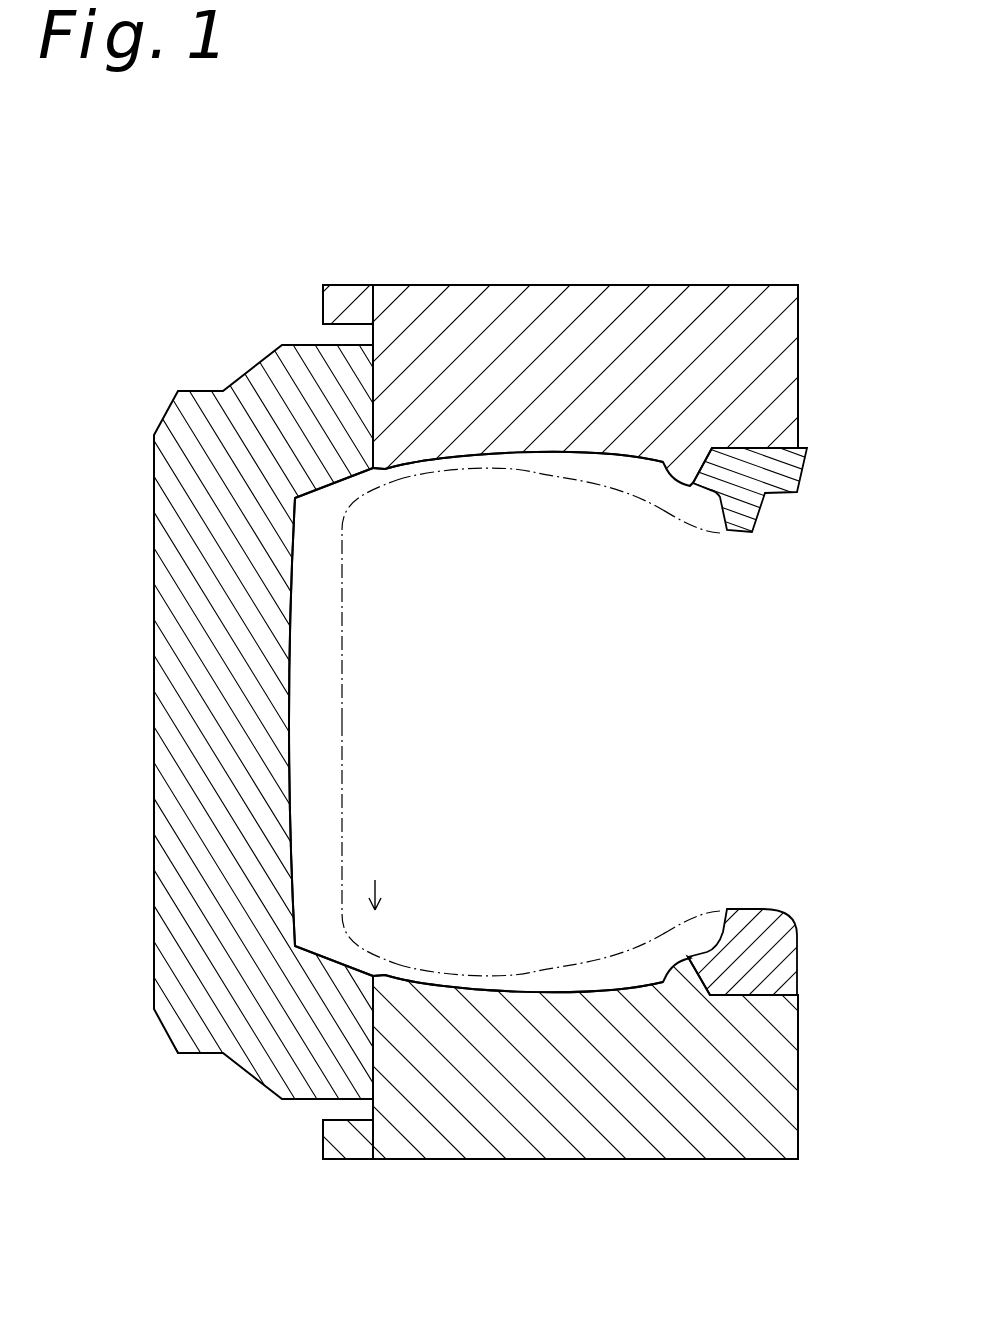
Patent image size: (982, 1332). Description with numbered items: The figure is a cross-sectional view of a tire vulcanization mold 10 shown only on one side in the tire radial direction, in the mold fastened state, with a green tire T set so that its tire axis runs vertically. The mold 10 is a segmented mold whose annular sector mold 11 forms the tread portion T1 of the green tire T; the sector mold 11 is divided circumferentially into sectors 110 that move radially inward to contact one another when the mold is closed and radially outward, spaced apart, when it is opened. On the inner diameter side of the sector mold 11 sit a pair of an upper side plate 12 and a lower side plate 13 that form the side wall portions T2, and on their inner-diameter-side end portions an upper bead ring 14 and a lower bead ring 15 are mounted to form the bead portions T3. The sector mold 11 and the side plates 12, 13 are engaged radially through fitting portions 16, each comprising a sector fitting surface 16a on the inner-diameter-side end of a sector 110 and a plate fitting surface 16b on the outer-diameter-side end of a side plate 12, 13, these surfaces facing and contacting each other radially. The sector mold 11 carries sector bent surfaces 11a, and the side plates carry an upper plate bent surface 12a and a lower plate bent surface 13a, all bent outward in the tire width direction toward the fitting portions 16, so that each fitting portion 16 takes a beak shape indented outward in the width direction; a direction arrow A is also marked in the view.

The tire vulcanization mold 10 is at (256, 347).
The sector mold 11 is at (257, 1083).
The sector 110 is at (206, 722).
The sector bent surface 11a is at (374, 478).
The upper side plate 12 is at (612, 285).
The upper plate bent surface 12a is at (377, 471).
The lower side plate 13 is at (548, 1160).
The lower plate bent surface 13a is at (378, 975).
The upper bead ring 14 is at (763, 510).
The lower bead ring 15 is at (789, 909).
The fitting portion 16 is at (390, 198).
The sector fitting surface 16a is at (405, 412).
The plate fitting surface 16b is at (410, 408).
The green tire T is at (343, 583).
The tread portion T1 is at (342, 799).
The side wall portion T2 is at (560, 477).
The bead portion T3 is at (697, 530).
The direction A is at (382, 889).